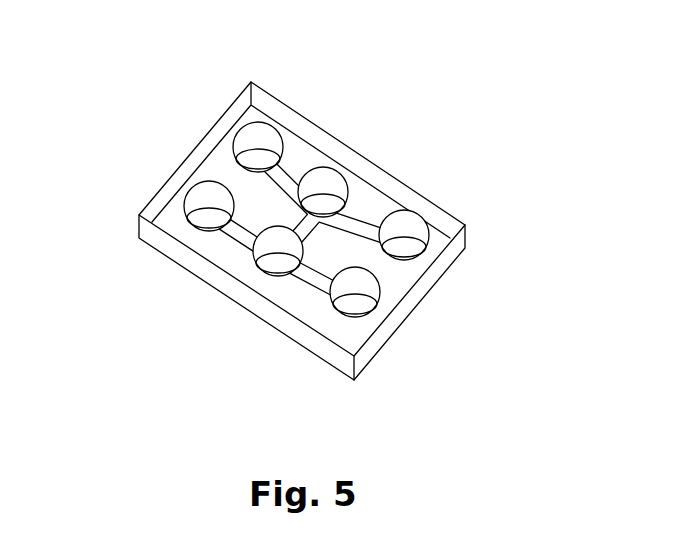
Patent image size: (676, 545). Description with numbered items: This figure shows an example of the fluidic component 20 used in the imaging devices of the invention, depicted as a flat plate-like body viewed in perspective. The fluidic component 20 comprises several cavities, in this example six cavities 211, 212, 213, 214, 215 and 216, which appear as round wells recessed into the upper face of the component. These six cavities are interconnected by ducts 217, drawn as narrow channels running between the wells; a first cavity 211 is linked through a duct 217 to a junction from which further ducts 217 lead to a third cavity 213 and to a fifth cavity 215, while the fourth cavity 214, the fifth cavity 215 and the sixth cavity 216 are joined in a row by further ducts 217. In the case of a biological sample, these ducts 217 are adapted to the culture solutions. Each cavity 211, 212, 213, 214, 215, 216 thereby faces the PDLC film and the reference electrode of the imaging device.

The fluidic component 20 is at (137, 118).
The cavity 211 is at (265, 137).
The cavity 212 is at (340, 183).
The cavity 213 is at (413, 225).
The cavity 214 is at (200, 218).
The cavity 215 is at (270, 266).
The cavity 216 is at (343, 308).
The ducts 217 is at (290, 188).